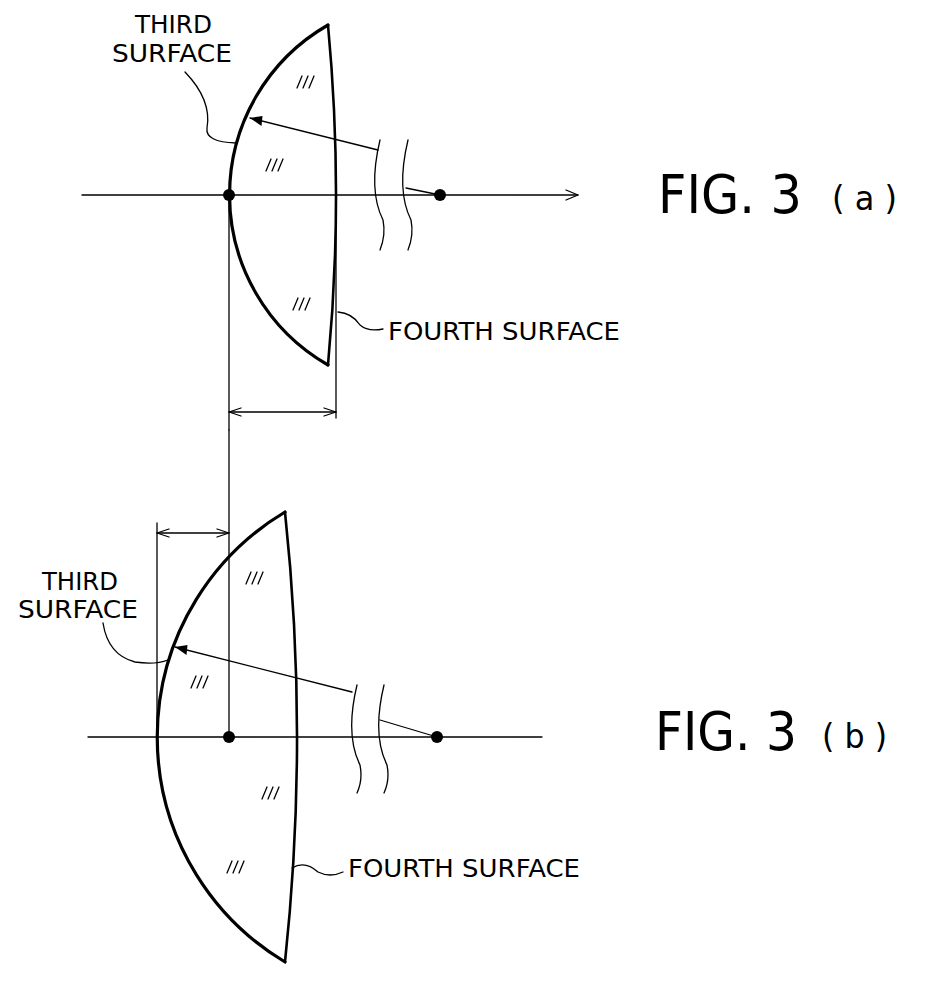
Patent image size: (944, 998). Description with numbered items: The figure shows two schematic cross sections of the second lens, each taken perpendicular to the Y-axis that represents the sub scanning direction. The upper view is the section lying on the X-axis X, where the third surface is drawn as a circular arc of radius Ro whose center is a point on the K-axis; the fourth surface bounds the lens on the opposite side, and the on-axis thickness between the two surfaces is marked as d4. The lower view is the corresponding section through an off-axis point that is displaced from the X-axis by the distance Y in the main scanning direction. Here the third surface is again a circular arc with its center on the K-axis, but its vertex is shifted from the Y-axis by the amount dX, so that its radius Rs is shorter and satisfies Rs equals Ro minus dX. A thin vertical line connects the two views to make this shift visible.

The X-axis X is at (345, 197).
The radius R0 Ro is at (345, 177).
The radius RS Rs is at (306, 719).
The thickness d4 is at (282, 395).
The shift amount delta X dX is at (193, 516).